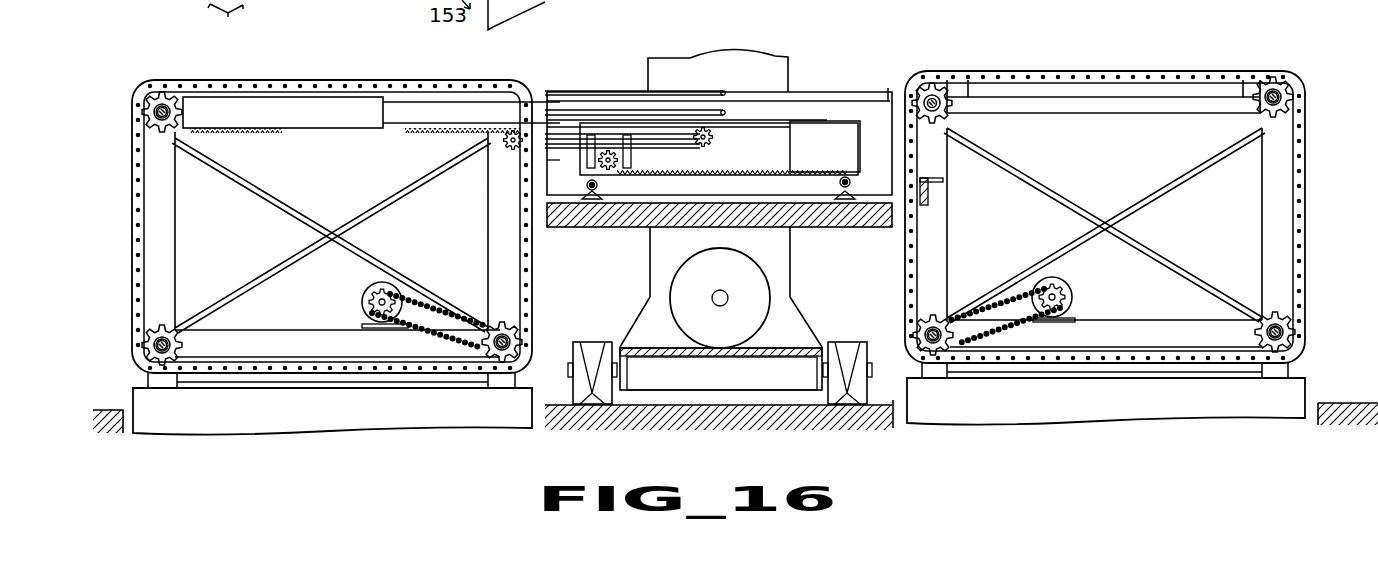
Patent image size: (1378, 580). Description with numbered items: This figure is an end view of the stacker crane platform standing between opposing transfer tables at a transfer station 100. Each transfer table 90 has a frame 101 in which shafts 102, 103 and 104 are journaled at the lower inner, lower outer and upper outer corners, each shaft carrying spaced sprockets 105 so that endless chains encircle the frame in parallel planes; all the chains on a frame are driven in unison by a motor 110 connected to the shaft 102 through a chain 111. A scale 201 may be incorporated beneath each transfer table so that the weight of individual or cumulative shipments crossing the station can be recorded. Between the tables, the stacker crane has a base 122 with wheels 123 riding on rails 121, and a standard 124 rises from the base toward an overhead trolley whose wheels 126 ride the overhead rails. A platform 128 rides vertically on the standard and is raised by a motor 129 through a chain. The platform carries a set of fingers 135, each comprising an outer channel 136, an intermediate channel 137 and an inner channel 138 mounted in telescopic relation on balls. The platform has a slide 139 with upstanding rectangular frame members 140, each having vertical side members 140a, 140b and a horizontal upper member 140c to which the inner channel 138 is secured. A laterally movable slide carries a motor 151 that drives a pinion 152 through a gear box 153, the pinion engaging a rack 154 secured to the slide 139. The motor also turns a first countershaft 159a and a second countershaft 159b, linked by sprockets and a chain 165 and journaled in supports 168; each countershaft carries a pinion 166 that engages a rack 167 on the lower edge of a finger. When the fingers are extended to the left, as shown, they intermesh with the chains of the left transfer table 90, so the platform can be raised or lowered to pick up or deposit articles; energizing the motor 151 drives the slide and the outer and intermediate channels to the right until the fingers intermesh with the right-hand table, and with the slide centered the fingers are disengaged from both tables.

The transfer table 90 is at (212, 76).
The transfer station 100 is at (315, 437).
The frame 101 is at (172, 222).
The shaft 102 is at (527, 322).
The shaft 103 is at (180, 347).
The shaft 104 is at (150, 100).
The sprocket 105 is at (146, 118).
The motor 110 is at (360, 303).
The chain 111 is at (418, 333).
The rail 121 is at (598, 412).
The base 122 is at (748, 358).
The wheel 123 is at (590, 357).
The standard 124 is at (700, 60).
The wheel 126 is at (748, 42).
The platform 128 is at (888, 85).
The motor 129 is at (702, 331).
The finger 135 is at (556, 85).
The outer channel 136 is at (322, 121).
The intermediate channel 137 is at (398, 112).
The inner channel 138 is at (812, 105).
The slide 139 is at (810, 208).
The rectangular frame member 140 is at (748, 200).
The vertical side member 140a is at (553, 170).
The vertical side member 140b is at (878, 165).
The horizontal upper member 140c is at (858, 92).
The motor 151 is at (634, 157).
The pinion 152 is at (610, 170).
The gear box 153 is at (598, 162).
The rack 154 is at (806, 172).
The first countershaft 159a is at (714, 136).
The second countershaft 159b is at (508, 145).
The chain 165 is at (604, 128).
The pinion 166 is at (487, 134).
The rack 167 is at (262, 134).
The support 168 is at (658, 132).
The scale 201 is at (320, 416).